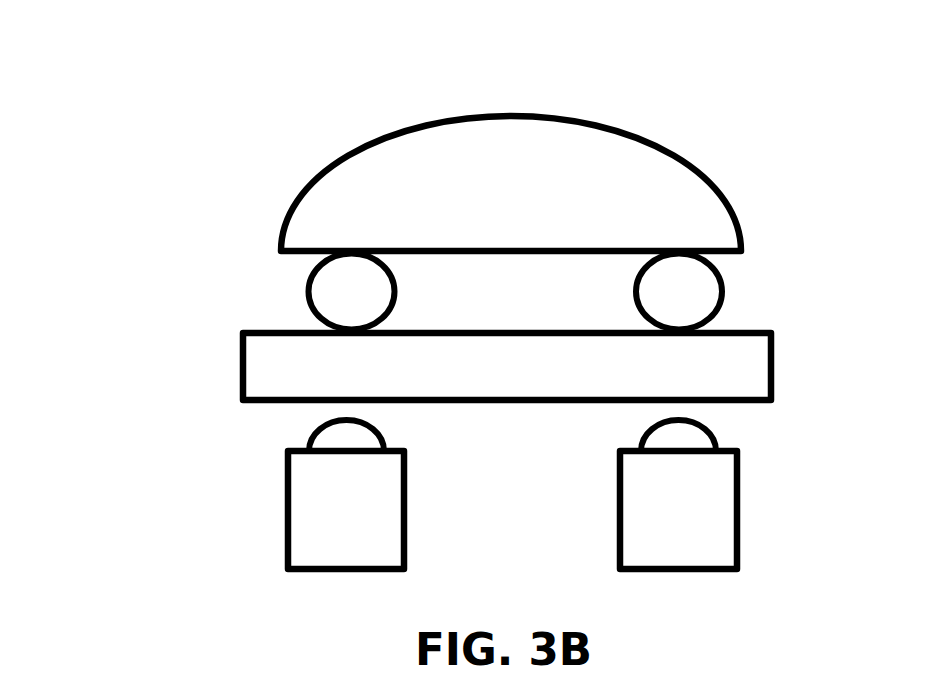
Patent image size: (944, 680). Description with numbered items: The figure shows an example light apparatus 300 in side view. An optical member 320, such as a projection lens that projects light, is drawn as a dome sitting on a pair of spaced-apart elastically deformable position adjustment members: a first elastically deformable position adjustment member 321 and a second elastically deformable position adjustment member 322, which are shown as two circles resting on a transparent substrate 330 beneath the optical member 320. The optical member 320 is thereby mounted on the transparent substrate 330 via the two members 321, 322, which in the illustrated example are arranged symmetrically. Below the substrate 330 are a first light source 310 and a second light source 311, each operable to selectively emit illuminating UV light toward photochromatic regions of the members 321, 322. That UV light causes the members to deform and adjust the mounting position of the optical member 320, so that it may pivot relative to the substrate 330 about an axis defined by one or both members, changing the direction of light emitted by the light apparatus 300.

The light apparatus 300 is at (112, 70).
The first light source 310 is at (369, 528).
The second light source 311 is at (709, 528).
The optical member 320 is at (312, 178).
The first elastically deformable position adjustment member 321 is at (322, 307).
The second elastically deformable position adjustment member 322 is at (649, 307).
The transparent substrate 330 is at (775, 372).